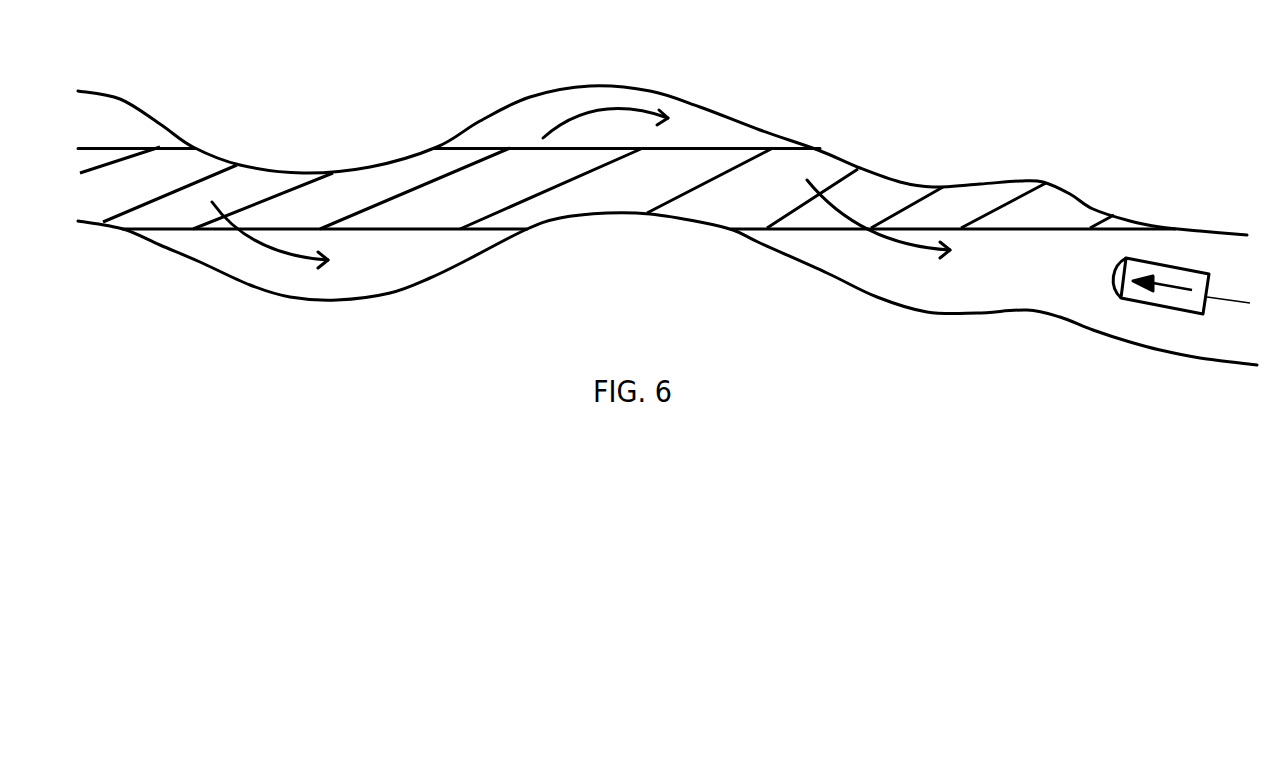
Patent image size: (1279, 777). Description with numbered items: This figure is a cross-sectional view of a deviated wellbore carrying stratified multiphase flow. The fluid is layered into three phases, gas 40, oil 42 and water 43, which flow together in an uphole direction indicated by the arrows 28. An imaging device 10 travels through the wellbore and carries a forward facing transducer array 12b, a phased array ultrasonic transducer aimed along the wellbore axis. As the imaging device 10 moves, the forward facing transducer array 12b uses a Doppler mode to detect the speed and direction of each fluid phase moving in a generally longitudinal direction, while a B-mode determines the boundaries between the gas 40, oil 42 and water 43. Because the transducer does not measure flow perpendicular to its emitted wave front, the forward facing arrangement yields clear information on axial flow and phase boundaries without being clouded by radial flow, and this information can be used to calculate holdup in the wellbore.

The imaging device 10 is at (1167, 302).
The forward facing transducer array 12b is at (1113, 273).
The arrows 28 is at (305, 257).
The gas 40 is at (112, 125).
The oil 42 is at (257, 182).
The water 43 is at (233, 267).